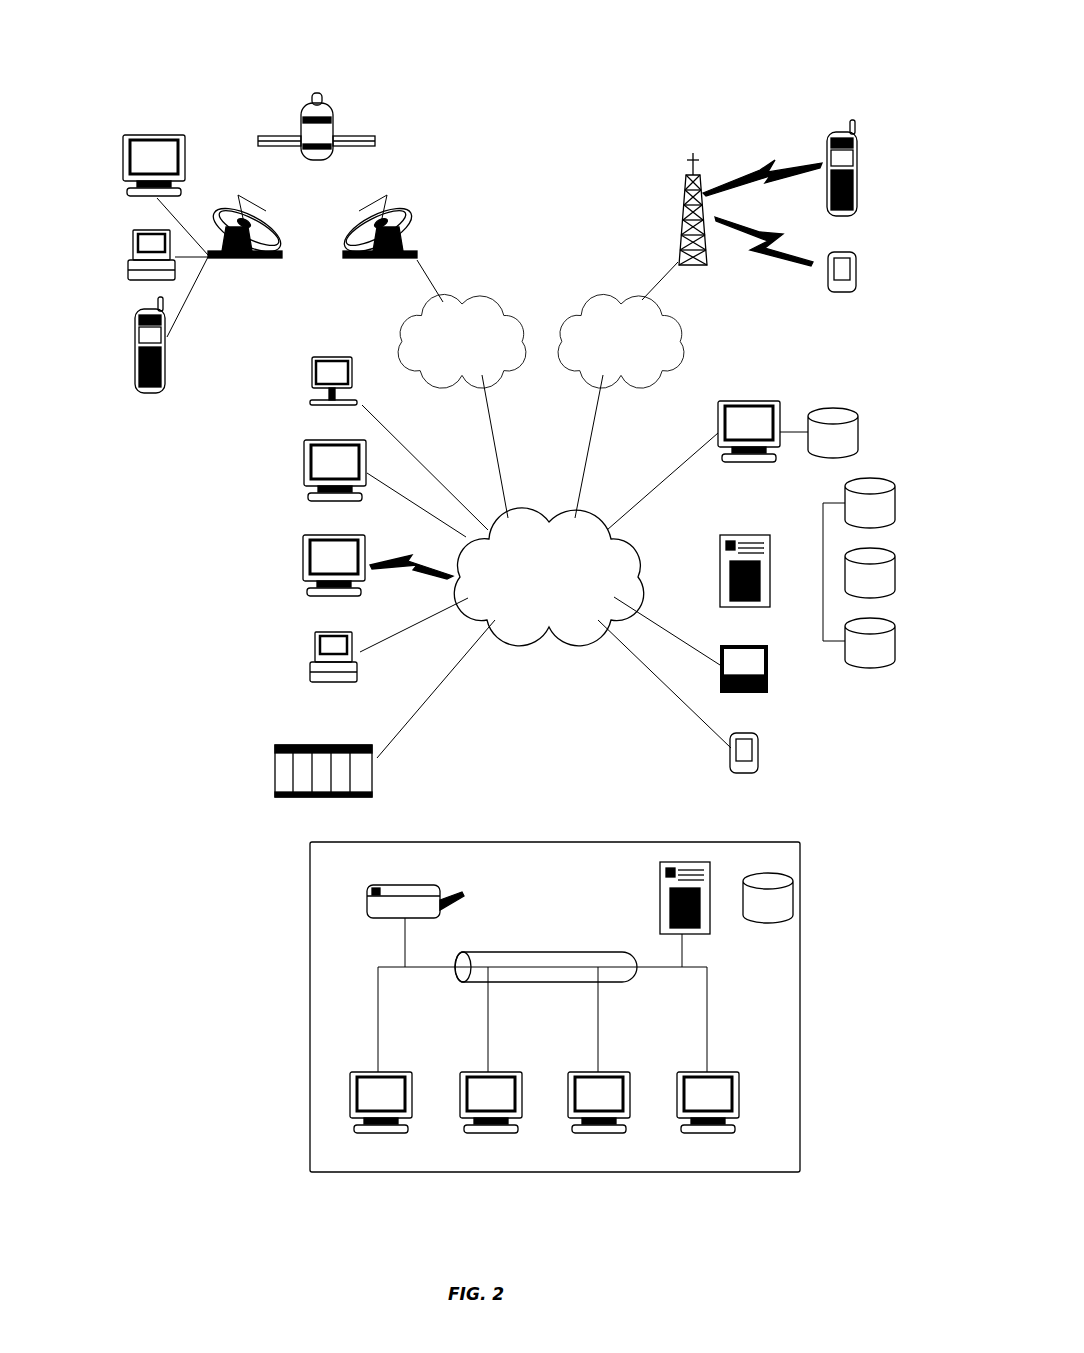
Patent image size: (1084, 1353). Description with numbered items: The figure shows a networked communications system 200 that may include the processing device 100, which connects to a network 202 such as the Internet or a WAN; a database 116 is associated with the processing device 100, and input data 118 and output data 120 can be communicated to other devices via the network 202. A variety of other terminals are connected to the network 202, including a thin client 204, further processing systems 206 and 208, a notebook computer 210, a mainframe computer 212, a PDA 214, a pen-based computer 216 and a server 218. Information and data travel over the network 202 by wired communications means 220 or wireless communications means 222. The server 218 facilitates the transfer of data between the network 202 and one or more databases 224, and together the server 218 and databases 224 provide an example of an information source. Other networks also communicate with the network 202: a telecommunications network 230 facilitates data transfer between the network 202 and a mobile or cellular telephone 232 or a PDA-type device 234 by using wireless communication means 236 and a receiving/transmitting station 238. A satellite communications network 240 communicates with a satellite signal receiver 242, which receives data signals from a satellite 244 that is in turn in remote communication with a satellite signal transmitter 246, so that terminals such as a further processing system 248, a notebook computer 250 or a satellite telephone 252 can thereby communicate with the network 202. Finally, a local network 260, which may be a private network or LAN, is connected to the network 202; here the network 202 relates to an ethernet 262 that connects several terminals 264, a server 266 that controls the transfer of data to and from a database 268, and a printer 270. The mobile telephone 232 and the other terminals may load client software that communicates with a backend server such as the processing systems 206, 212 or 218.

The networked communications system 200 is at (583, 82).
The processing device 100 is at (750, 401).
The database 116 is at (833, 433).
The input data 118 is at (662, 480).
The output data 120 is at (666, 476).
The network 202 is at (548, 577).
The thin client 204 is at (310, 404).
The further processing system 206 is at (305, 475).
The further processing system 208 is at (304, 572).
The notebook computer 210 is at (310, 662).
The mainframe computer 212 is at (275, 770).
The PDA 214 is at (759, 757).
The pen-based computer 216 is at (768, 667).
The server 218 is at (728, 532).
The wired communications means 220 is at (416, 505).
The wireless communications means 222 is at (411, 581).
The databases 224 is at (859, 573).
The telecommunications network 230 is at (621, 406).
The mobile or cellular telephone 232 is at (862, 160).
The PDA-type device 234 is at (856, 278).
The wireless communication means 236 is at (762, 213).
The receiving/transmitting station 238 is at (680, 227).
The satellite communications network 240 is at (462, 406).
The satellite signal receiver 242 is at (412, 220).
The satellite 244 is at (362, 132).
The satellite signal transmitter 246 is at (241, 260).
The further processing system 248 is at (150, 134).
The notebook computer 250 is at (128, 258).
The satellite telephone 252 is at (150, 396).
The local network 260 is at (308, 935).
The ethernet 262 is at (550, 952).
The terminals 264 is at (380, 1136).
The server 266 is at (658, 900).
The database 268 is at (768, 898).
The printer 270 is at (405, 885).